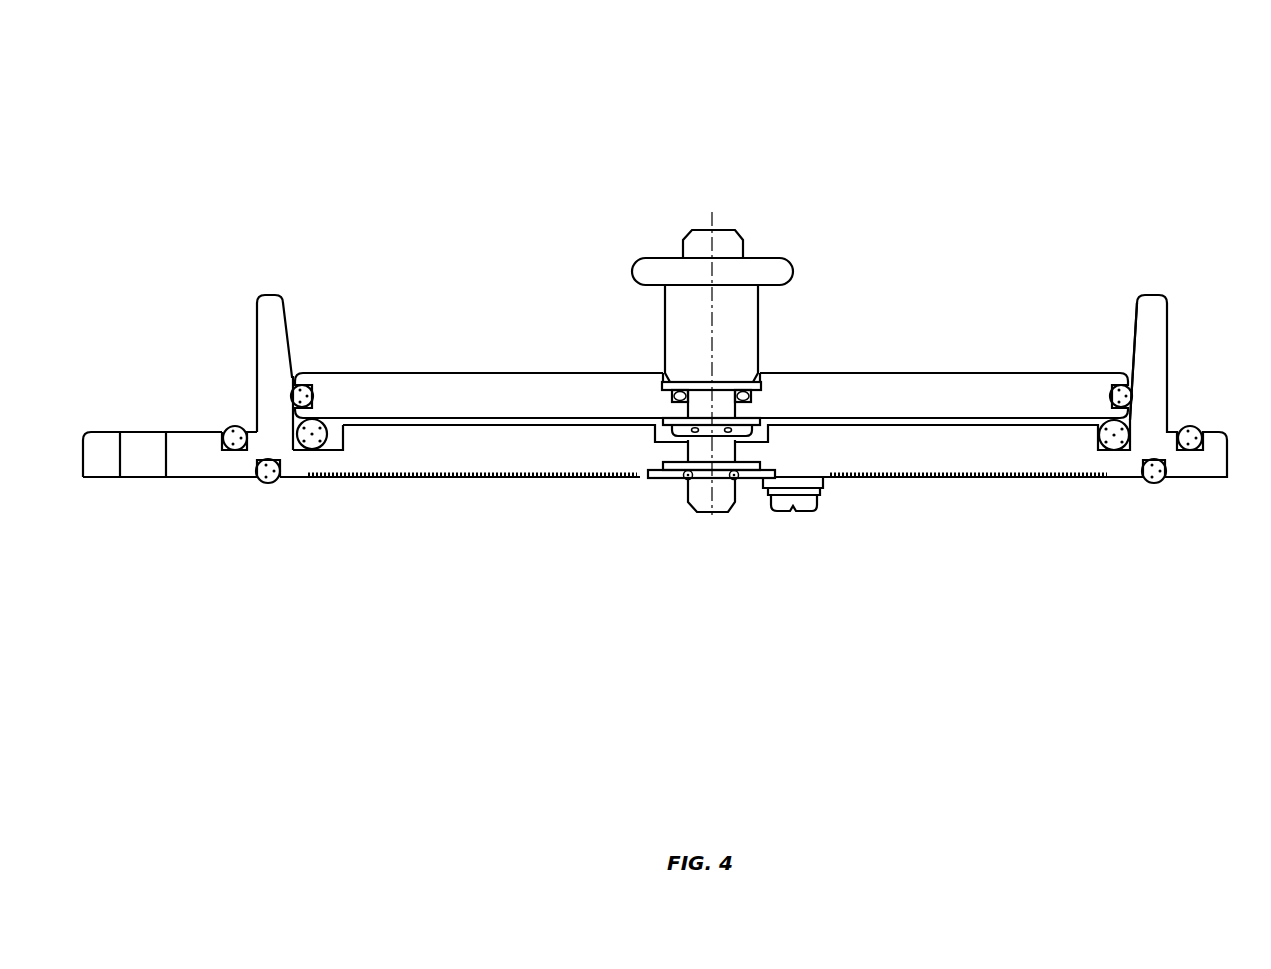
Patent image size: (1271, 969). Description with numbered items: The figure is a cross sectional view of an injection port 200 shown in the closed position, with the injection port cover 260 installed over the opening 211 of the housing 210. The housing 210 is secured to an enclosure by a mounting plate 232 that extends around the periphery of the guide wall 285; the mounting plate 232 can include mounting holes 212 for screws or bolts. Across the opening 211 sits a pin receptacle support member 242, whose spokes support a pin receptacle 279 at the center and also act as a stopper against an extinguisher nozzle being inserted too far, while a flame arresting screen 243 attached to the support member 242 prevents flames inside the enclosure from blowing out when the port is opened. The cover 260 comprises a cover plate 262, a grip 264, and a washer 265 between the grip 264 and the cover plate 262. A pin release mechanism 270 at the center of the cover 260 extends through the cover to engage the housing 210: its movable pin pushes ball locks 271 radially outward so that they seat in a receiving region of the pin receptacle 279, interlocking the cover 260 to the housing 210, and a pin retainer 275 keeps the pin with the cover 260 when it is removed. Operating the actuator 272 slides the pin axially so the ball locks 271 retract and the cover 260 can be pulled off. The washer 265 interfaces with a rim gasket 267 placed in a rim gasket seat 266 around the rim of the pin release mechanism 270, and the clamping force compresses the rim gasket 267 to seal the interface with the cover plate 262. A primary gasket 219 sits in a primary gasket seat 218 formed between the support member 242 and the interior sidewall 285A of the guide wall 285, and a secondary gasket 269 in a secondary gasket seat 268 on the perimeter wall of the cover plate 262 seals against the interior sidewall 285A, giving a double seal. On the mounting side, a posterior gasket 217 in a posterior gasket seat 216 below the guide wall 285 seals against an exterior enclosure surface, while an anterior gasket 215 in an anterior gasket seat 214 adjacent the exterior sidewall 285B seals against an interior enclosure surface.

The injection port 200 is at (1078, 128).
The housing 210 is at (1043, 457).
The opening 211 is at (480, 452).
The mounting holes 212 is at (147, 457).
The anterior gasket seat 214 is at (222, 445).
The anterior gasket 215 is at (233, 423).
The posterior gasket seat 216 is at (283, 463).
The posterior gasket 217 is at (268, 482).
The primary gasket seat 218 is at (330, 440).
The primary gasket 219 is at (309, 433).
The mounting plate 232 is at (203, 465).
The pin receptacle support member 242 is at (895, 452).
The flame arresting screen 243 is at (1010, 478).
The injection port cover 260 is at (1043, 410).
The cover plate 262 is at (415, 395).
The grip 264 is at (750, 308).
The washer 265 is at (695, 385).
The rim gasket seat 266 is at (672, 398).
The rim gasket 267 is at (680, 397).
The secondary gasket seat 268 is at (1115, 390).
The secondary gasket 269 is at (1113, 392).
The pin release mechanism 270 is at (720, 395).
The ball locks 271 is at (688, 478).
The actuator 272 is at (728, 242).
The pin retainer 275 is at (737, 428).
The pin receptacle 279 is at (678, 476).
The guide wall 285 is at (1148, 322).
The interior sidewall 285A is at (1128, 363).
The exterior sidewall 285B is at (1168, 377).